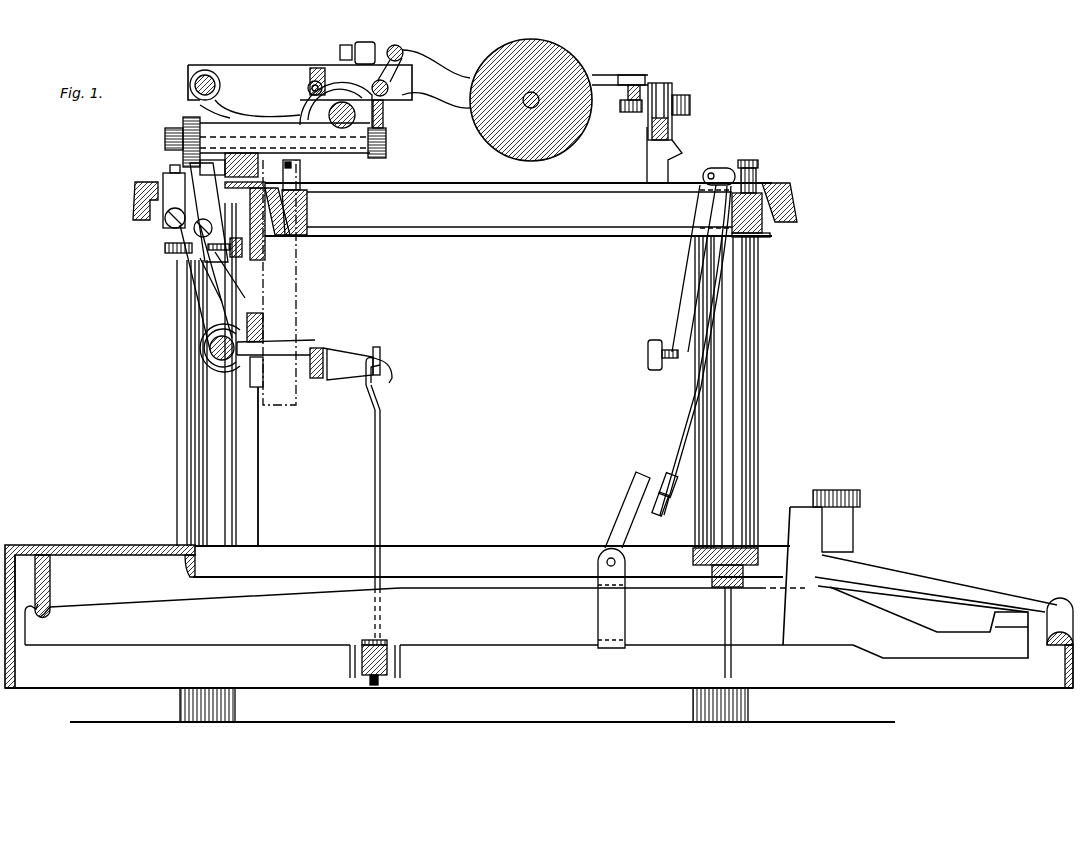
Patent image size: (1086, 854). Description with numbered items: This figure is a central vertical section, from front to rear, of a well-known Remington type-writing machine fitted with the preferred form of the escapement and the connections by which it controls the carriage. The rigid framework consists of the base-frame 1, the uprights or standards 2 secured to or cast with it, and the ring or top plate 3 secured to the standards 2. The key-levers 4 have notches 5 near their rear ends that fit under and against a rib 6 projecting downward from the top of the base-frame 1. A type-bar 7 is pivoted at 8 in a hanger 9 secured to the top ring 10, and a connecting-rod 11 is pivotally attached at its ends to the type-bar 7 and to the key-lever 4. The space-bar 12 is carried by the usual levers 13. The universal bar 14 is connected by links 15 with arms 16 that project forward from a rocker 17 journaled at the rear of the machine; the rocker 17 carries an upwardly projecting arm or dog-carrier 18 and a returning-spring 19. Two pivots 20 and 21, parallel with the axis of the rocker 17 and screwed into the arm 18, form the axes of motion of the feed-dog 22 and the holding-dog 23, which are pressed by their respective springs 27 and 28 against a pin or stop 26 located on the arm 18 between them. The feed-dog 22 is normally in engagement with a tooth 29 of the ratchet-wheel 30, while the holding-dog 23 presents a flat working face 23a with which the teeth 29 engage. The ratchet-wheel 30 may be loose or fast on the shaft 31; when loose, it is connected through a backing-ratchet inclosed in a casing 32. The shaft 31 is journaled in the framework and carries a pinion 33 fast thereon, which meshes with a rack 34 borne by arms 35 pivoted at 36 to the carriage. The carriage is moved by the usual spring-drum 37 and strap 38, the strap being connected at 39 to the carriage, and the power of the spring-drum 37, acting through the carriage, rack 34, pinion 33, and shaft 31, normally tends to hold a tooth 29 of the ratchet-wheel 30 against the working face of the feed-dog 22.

The base-frame 1 is at (125, 545).
The uprights or standards 2 is at (180, 438).
The ring or top plate 3 is at (524, 232).
The key-levers 4 is at (427, 606).
The notches 5 is at (52, 608).
The rib 6 is at (52, 575).
The type-bar 7 is at (682, 311).
The pivot 8 is at (711, 168).
The hanger 9 is at (760, 182).
The top ring 10 is at (725, 200).
The connecting-rod 11 is at (684, 425).
The space-bar 12 is at (1011, 616).
The levers 13 is at (827, 569).
The universal bar 14 is at (388, 660).
The links 15 is at (375, 446).
The arms 16 is at (340, 358).
The rocker 17 is at (212, 352).
The arm or dog-carrier 18 is at (206, 287).
The returning-spring 19 is at (210, 370).
The pivot 20 is at (204, 220).
The pivot 21 is at (168, 226).
The feed-dog 22 is at (209, 212).
The holding-dog 23 is at (174, 200).
The flat working face 23a is at (172, 166).
The pin or stop 26 is at (165, 198).
The spring 27 is at (200, 270).
The spring 28 is at (188, 260).
The tooth 29 is at (215, 115).
The ratchet-wheel 30 is at (210, 115).
The shaft 31 is at (352, 147).
The casing 32 is at (180, 125).
The pinion 33 is at (386, 140).
The rack 34 is at (384, 113).
The arms 35 is at (362, 84).
The pivot 36 is at (308, 88).
The spring-drum 37 is at (290, 302).
The strap 38 is at (292, 164).
The connection 39 is at (290, 170).